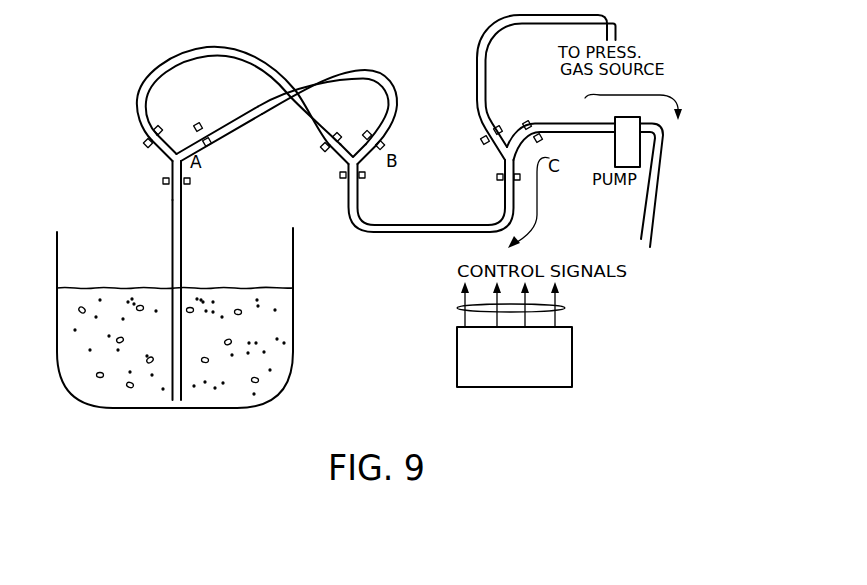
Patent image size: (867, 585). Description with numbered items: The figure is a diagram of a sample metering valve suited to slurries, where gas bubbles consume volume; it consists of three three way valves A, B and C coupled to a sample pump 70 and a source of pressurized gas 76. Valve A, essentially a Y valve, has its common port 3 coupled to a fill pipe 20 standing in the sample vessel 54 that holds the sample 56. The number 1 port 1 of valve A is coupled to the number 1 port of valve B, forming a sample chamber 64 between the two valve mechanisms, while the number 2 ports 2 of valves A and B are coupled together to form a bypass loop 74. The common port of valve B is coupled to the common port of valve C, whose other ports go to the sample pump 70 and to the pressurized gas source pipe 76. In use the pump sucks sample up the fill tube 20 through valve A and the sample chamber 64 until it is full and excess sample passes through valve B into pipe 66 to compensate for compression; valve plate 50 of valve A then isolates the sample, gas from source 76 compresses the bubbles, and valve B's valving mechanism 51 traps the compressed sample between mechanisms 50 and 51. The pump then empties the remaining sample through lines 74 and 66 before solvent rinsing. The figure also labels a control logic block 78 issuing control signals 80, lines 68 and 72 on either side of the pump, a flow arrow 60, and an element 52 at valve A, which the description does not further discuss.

The number 1 port 1 is at (316, 140).
The number 2 port 2 is at (377, 136).
The common port 3 is at (346, 186).
The fill pipe 20 is at (182, 237).
The valve plate 50 is at (166, 141).
The valving mechanism 51 is at (342, 157).
The tube neck 52 is at (172, 158).
The sample vessel 54 is at (293, 327).
The sample 56 is at (222, 337).
The flow direction arrow 60 is at (622, 105).
The sample chamber 64 is at (215, 47).
The pipe 66 is at (405, 233).
The pump inlet tube 68 is at (607, 135).
The sample pump 70 is at (636, 145).
The pump outlet tube 72 is at (648, 222).
The bypass loop 74 is at (361, 70).
The source of pressurized gas 76 is at (607, 28).
The control logic 78 is at (572, 361).
The control signal bus 80 is at (565, 308).